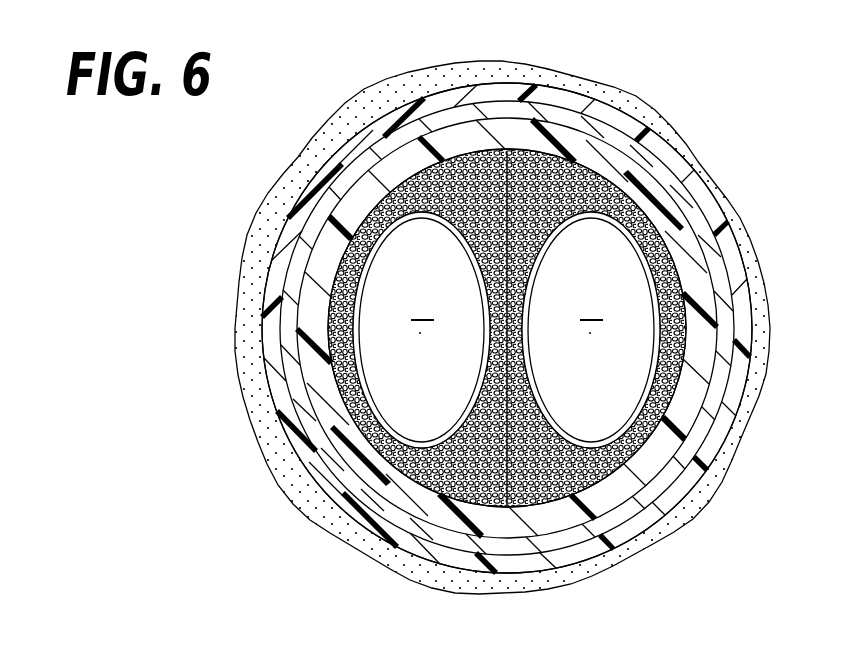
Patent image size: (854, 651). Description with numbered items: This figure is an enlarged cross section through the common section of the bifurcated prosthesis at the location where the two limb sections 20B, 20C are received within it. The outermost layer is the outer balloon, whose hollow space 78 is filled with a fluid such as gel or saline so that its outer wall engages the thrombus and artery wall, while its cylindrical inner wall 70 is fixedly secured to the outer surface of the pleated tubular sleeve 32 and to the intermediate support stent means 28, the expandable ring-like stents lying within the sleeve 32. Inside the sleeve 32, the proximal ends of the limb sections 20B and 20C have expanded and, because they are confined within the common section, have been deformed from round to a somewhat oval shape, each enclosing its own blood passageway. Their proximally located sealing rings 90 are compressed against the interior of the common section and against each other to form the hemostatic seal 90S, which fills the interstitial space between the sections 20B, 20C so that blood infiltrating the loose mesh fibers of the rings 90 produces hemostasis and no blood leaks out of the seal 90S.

The sealing ring 90 is at (522, 154).
The hollow space 78 is at (552, 83).
The cylindrical inner wall 70 is at (583, 107).
The intermediate support stent means 28 is at (635, 157).
The limb section 20C is at (658, 243).
The tubular sleeve 32 is at (358, 200).
The limb section 20B is at (336, 370).
The hemostatic seal 90S is at (453, 500).